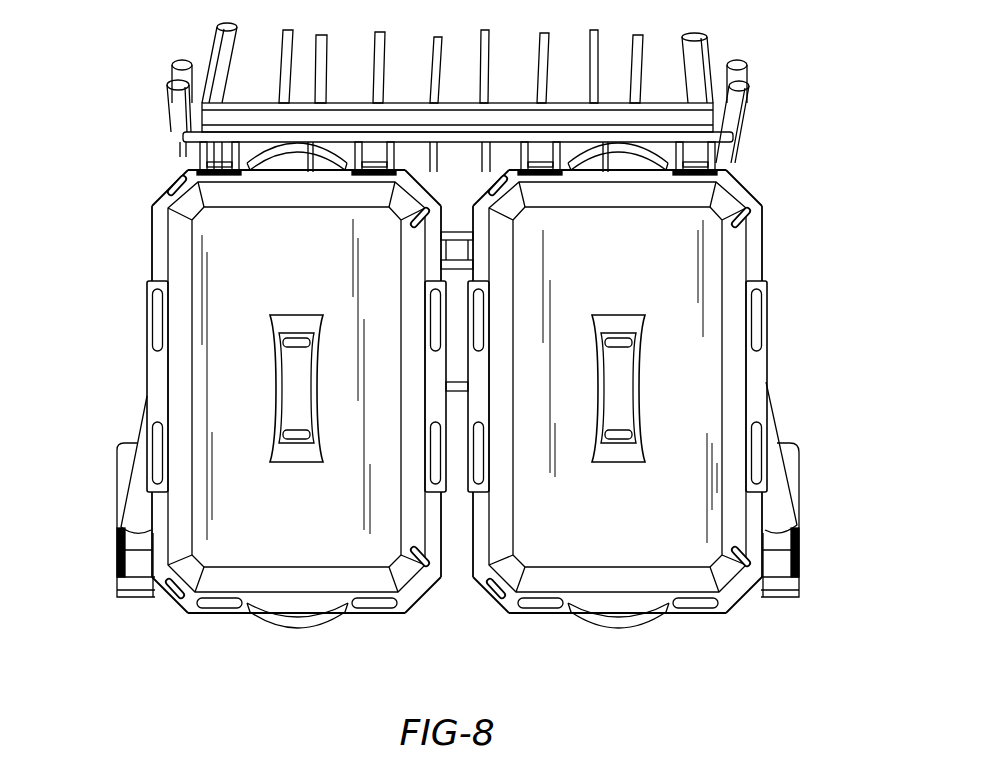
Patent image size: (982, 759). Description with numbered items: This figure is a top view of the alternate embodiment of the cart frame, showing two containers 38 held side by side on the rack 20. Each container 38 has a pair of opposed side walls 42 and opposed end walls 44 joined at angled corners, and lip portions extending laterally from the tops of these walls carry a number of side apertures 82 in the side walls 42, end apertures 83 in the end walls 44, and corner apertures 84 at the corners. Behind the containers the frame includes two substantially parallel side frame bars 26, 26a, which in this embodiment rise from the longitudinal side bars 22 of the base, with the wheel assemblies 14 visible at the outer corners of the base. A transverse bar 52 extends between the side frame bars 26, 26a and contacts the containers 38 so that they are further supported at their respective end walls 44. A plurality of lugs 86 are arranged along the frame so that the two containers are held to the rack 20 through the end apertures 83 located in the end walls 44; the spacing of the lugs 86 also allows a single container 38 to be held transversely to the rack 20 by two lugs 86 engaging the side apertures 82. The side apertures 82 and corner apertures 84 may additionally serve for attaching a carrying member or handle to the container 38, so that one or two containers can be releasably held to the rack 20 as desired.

The wheel assembly 14 is at (455, 370).
The rack structure 20 is at (283, 44).
The longitudinal side bar 22 is at (697, 68).
The side frame bar 26 is at (746, 62).
The side frame bar 26a is at (738, 99).
The container 38 is at (455, 409).
The side wall 42 is at (296, 385).
The end wall 44 is at (292, 583).
The transverse bar 52 is at (452, 138).
The side aperture 82 is at (157, 318).
The end aperture 83 is at (196, 171).
The corner aperture 84 is at (172, 595).
The lug 86 is at (385, 157).